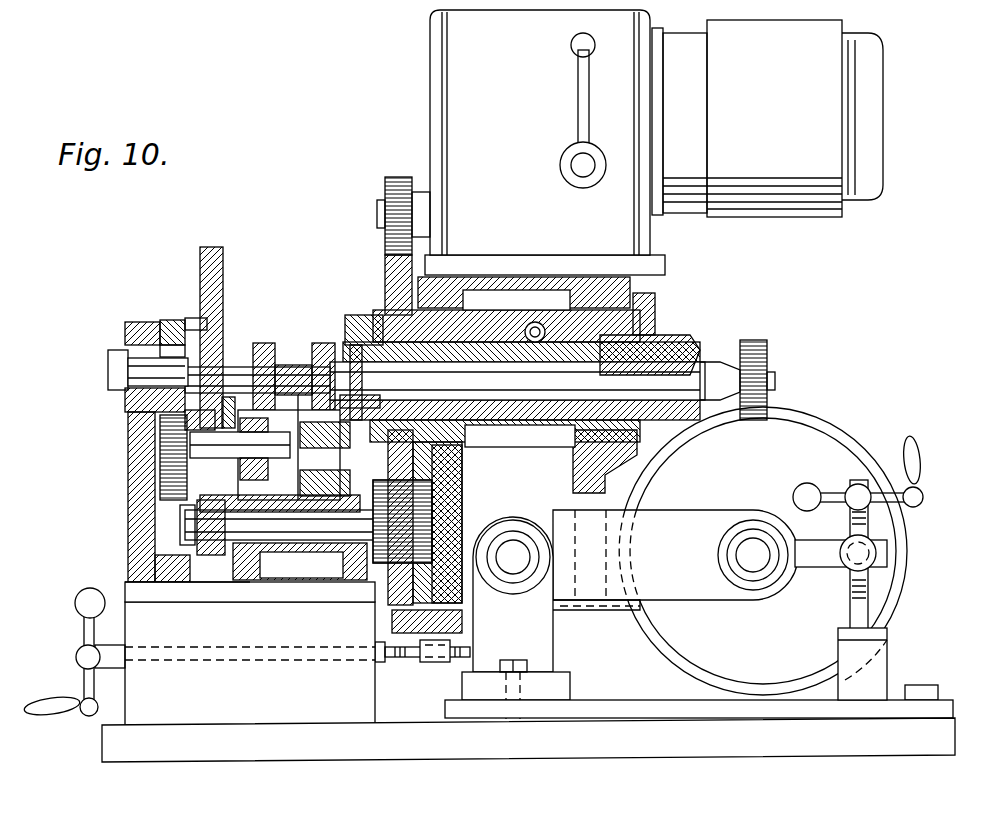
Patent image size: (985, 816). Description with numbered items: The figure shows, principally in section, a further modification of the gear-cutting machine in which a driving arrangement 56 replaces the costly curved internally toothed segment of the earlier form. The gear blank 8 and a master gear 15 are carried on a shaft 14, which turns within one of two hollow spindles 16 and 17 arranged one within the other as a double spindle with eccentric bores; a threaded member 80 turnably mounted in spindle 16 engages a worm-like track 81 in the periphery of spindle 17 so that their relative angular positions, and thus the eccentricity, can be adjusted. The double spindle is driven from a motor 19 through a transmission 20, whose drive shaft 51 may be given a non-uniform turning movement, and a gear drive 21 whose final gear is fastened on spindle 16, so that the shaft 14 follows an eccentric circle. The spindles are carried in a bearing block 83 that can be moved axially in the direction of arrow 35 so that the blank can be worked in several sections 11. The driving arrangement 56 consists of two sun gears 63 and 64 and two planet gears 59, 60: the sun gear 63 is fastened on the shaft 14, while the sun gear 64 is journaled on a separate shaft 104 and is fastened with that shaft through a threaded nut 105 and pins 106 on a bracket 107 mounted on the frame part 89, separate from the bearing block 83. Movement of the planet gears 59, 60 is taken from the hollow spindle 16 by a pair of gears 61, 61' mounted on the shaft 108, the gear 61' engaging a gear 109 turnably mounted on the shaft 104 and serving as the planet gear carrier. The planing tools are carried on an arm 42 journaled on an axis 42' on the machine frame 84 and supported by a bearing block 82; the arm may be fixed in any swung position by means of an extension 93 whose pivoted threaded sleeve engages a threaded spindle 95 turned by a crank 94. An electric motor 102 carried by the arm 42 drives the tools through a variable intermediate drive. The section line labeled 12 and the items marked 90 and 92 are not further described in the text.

The gear blank 8 is at (768, 355).
The sections 11 is at (180, 275).
The section line 12 is at (290, 300).
The shaft 14 is at (352, 360).
The master gear 15 is at (330, 336).
The hollow spindle 16 is at (655, 325).
The hollow spindle 17 is at (680, 352).
The motor 19 is at (797, 208).
The transmission 20 is at (442, 70).
The gear drive 21 is at (385, 270).
The arrow 35 is at (535, 455).
The arm 42 is at (518, 540).
The axis 42' is at (552, 557).
The drive shaft 51 is at (380, 208).
The driving arrangement 56 is at (172, 320).
The planet gear 59 is at (240, 483).
The planet gear 60 is at (162, 512).
The gear 61 is at (250, 592).
The gear 61' is at (187, 592).
The sun gear 63 is at (283, 335).
The sun gear 64 is at (165, 322).
The threaded member 80 is at (535, 322).
The worm-like track 81 is at (540, 412).
The bearing block 82 is at (388, 462).
The bearing block 83 is at (462, 497).
The machine frame 84 is at (182, 756).
The frame part 89 is at (322, 714).
The nut 90 is at (441, 662).
The hand knob 92 is at (58, 690).
The extension 93 is at (828, 562).
The crank 94 is at (920, 462).
The threaded spindle 95 is at (870, 626).
The electric motor 102 is at (830, 447).
The shaft 104 is at (125, 395).
The threaded nut 105 is at (108, 372).
The pins 106 is at (125, 328).
The bracket 107 is at (128, 523).
The shaft 108 is at (301, 565).
The gear 109 is at (224, 297).